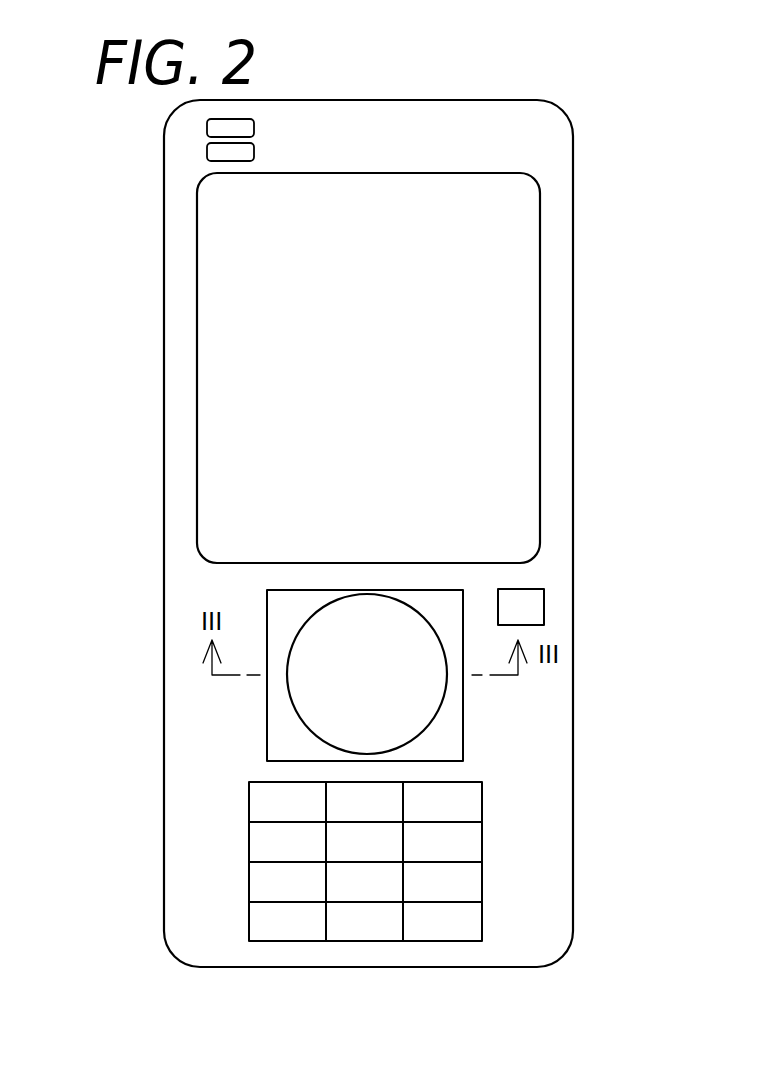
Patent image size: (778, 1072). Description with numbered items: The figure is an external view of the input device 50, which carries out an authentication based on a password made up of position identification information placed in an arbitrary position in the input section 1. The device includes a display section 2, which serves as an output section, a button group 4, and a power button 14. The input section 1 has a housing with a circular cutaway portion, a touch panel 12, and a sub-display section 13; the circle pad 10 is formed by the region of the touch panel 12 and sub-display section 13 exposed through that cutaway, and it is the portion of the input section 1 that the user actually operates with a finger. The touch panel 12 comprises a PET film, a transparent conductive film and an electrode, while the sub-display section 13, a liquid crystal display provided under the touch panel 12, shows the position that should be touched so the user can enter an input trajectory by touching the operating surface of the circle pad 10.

The input device 50 is at (577, 48).
The display section 2 is at (462, 183).
The input section 1 is at (256, 718).
The circle pad 10 is at (440, 730).
The touch panel 12 is at (333, 617).
The sub-display section 13 is at (397, 617).
The power button 14 is at (532, 605).
The button group 4 is at (332, 932).